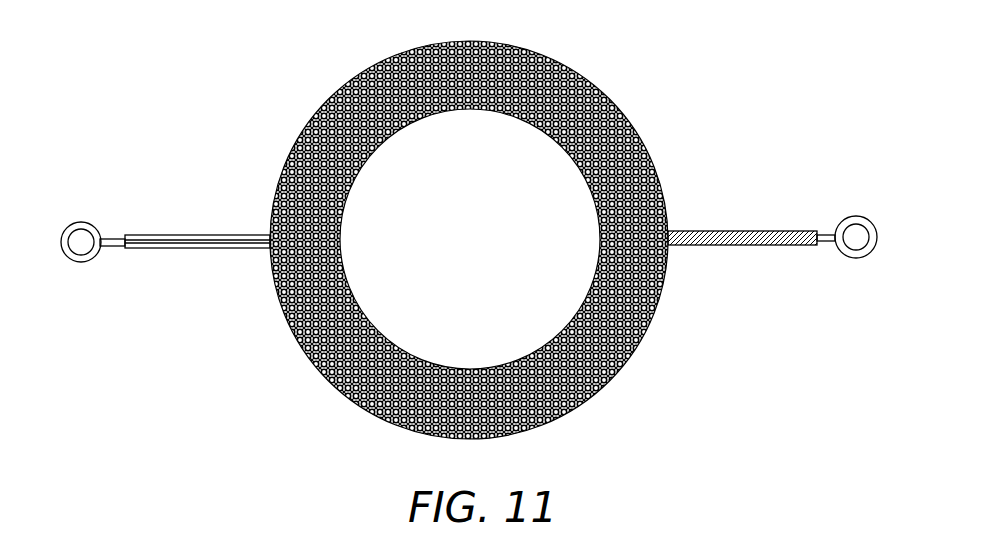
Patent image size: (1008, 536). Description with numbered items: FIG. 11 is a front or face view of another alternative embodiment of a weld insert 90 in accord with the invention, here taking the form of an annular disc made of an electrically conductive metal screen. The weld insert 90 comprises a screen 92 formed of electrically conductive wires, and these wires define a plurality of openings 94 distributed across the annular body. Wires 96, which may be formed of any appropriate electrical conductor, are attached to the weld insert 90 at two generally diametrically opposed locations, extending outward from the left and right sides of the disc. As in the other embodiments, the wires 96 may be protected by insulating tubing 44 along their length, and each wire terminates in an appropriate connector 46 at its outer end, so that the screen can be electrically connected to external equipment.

The weld insert 90 is at (633, 100).
The screen 92 is at (360, 161).
The openings 94 is at (357, 78).
The wires 96 is at (272, 258).
The insulating tubing 44 is at (158, 250).
The connectors 46 is at (90, 225).